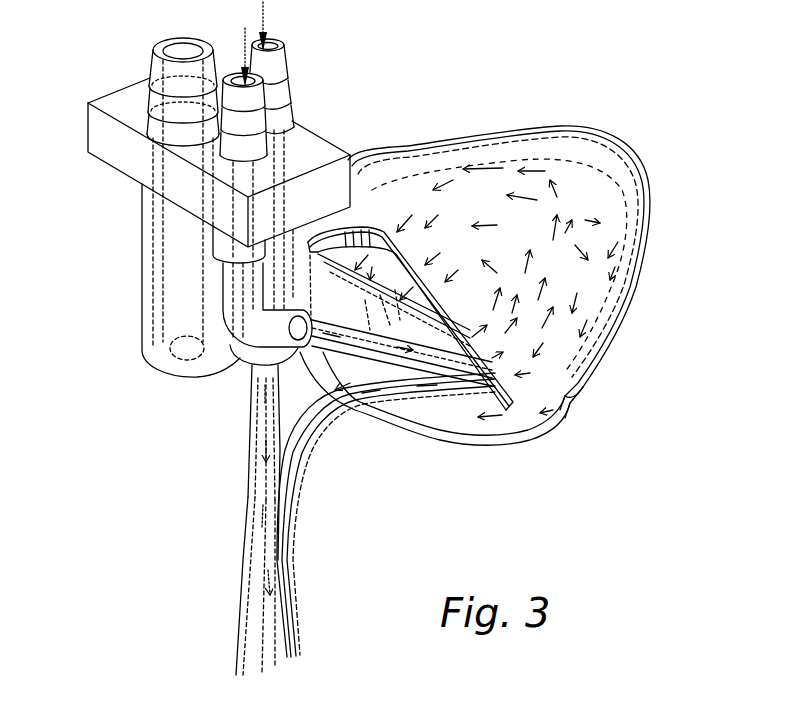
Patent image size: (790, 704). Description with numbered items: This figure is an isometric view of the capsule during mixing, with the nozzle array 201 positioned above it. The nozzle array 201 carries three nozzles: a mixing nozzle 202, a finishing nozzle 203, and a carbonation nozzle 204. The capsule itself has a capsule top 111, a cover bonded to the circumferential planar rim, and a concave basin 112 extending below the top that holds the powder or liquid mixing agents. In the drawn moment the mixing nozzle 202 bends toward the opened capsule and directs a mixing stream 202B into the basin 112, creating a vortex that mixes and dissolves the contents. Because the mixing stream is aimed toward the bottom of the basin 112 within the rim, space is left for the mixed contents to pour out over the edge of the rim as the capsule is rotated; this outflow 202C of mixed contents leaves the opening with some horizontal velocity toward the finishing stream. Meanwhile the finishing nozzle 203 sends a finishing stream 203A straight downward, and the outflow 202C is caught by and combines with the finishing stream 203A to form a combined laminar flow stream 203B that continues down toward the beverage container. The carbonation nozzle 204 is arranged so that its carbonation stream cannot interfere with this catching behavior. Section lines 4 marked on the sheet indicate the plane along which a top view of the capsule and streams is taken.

The section lines 4- 4 is at (677, 163).
The capsule top 111 is at (540, 157).
The concave basin 112 is at (572, 404).
The nozzle array 201 is at (86, 131).
The mixing nozzle 202 is at (222, 314).
The mixing stream 202B is at (343, 430).
The outflow of mixed contents 202C is at (320, 460).
The finishing nozzle 203 is at (293, 78).
The finishing stream 203A is at (250, 416).
The laminar flow stream 203B is at (300, 628).
The carbonation nozzle 204 is at (153, 60).